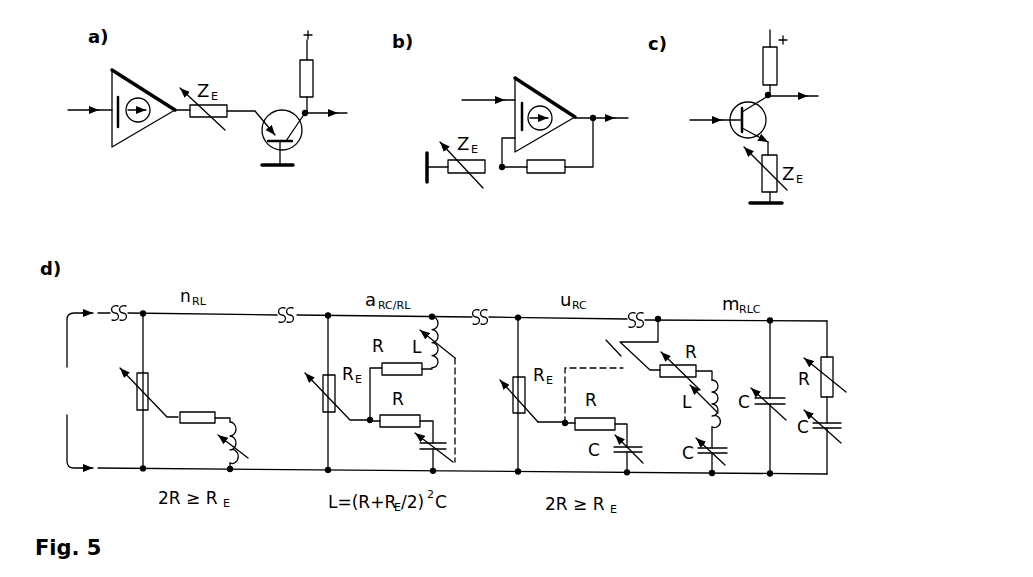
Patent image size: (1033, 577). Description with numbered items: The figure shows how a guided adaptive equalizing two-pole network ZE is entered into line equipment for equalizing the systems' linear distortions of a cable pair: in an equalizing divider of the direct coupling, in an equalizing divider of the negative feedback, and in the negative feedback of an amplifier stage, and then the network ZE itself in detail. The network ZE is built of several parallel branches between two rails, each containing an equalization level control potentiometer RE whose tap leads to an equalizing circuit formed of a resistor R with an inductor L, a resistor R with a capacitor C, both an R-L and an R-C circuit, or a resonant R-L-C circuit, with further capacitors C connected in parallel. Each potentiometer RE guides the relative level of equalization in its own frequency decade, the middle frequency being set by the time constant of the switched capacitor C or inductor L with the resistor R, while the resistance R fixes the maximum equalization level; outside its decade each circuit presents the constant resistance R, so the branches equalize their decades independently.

The guided adaptive equalizing two-pole network ZE is at (74, 390).
The equalization level control potentiometer RE is at (149, 389).
The resistor R is at (205, 404).
The inductor L is at (228, 445).
The capacitor C is at (424, 446).